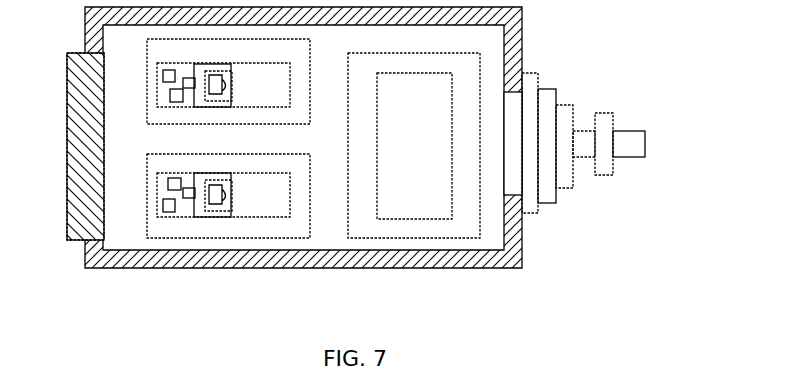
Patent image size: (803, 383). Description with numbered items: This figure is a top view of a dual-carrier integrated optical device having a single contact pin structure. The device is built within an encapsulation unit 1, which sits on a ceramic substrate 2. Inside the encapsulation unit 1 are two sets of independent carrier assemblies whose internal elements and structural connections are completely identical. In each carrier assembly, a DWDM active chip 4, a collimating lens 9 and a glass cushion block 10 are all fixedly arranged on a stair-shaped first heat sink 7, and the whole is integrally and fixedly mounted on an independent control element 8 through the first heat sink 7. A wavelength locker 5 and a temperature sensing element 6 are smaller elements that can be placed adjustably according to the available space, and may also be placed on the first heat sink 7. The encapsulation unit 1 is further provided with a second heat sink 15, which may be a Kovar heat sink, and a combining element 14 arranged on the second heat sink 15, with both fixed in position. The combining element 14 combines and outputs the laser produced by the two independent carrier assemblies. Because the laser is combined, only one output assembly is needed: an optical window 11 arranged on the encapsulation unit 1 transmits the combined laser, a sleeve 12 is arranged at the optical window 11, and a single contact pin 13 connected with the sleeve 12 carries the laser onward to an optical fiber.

The encapsulation unit 1 is at (117, 268).
The ceramic substrate 2 is at (70, 148).
The DWDM active chip 4 is at (190, 88).
The wavelength locker 5 is at (163, 75).
The temperature sensing element 6 is at (170, 98).
The first heat sink 7 is at (290, 104).
The independent control element 8 is at (295, 50).
The collimating lens 9 is at (218, 94).
The glass cushion block 10 is at (232, 86).
The optical window 11 is at (510, 117).
The sleeve 12 is at (557, 103).
The contact pin 13 is at (613, 130).
The combining element 14 is at (392, 78).
The second heat sink 15 is at (377, 147).